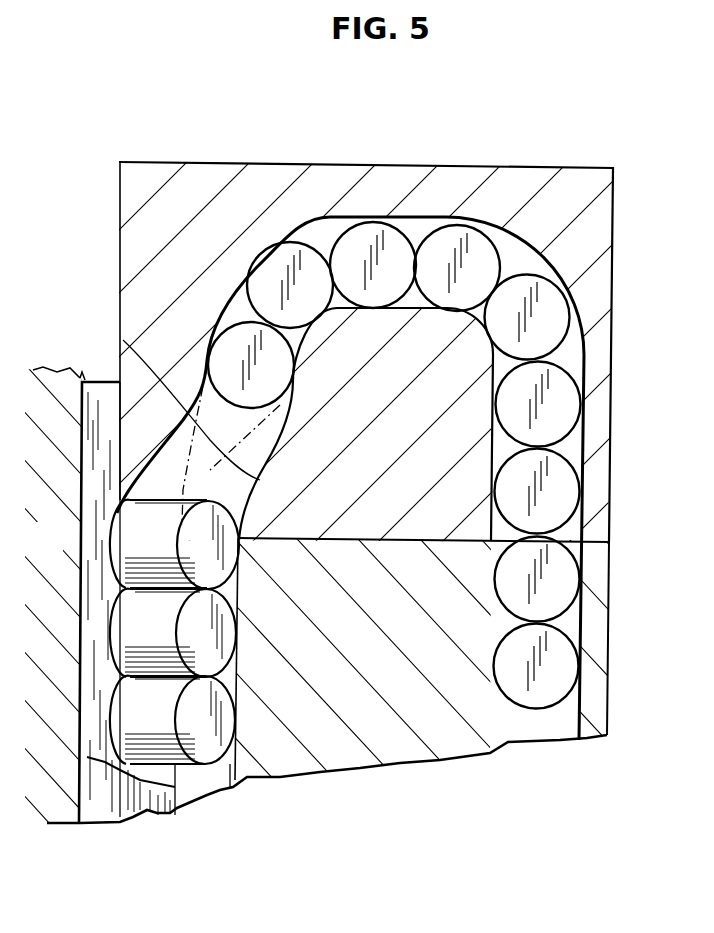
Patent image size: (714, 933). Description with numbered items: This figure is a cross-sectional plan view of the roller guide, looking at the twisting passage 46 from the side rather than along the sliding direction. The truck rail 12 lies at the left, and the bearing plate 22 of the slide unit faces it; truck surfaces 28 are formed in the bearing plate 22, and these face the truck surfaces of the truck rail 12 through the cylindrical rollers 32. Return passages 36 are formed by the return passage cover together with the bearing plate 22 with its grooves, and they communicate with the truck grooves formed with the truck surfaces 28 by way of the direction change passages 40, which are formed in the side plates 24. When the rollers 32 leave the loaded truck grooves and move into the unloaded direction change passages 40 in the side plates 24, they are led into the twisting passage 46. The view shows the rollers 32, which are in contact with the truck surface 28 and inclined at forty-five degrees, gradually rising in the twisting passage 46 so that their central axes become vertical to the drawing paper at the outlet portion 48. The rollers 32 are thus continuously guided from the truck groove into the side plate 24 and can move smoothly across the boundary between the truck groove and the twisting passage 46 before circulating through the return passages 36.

The truck rail 12 is at (60, 551).
The bearing plate 22 is at (346, 762).
The side plate 24 is at (215, 178).
The truck surface 28 is at (203, 783).
The cylindrical roller 32 is at (118, 381).
The return passage 36 is at (578, 711).
The direction change passage 40 is at (422, 222).
The twisting passage 46 is at (133, 525).
The outlet portion 48 is at (193, 365).